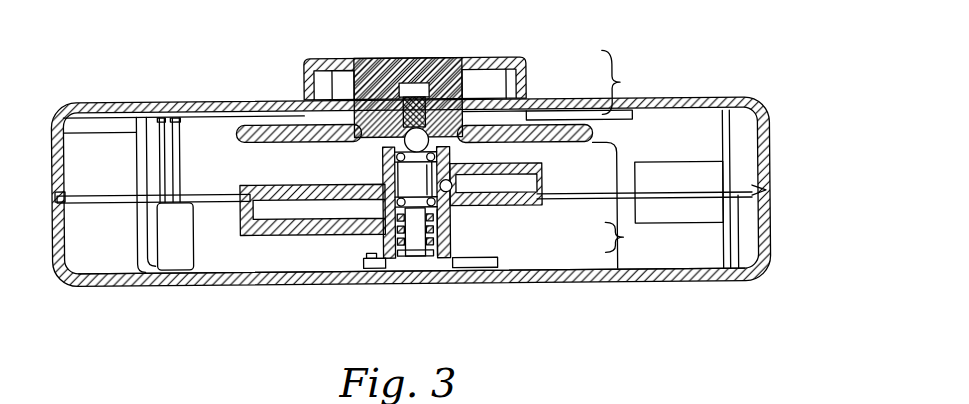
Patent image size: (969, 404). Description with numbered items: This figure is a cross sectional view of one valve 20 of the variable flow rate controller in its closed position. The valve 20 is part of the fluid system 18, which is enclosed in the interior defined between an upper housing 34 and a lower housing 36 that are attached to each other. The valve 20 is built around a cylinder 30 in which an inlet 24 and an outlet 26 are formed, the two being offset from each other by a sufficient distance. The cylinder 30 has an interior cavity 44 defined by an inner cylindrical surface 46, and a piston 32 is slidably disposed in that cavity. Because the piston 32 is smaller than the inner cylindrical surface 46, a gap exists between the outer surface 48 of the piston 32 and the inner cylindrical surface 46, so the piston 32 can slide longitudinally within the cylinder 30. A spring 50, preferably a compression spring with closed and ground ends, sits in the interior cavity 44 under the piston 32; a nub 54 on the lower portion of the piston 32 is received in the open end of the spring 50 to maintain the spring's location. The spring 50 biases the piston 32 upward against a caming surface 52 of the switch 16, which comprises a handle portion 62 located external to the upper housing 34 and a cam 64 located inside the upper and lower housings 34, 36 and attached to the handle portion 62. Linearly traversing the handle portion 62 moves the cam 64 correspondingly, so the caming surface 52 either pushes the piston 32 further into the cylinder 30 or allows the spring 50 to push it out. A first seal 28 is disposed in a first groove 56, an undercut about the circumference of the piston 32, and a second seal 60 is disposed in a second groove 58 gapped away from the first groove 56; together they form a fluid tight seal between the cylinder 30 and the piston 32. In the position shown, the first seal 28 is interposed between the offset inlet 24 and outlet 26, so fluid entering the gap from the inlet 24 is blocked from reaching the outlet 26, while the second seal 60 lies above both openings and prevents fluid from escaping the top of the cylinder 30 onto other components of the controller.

The switch 16 is at (631, 82).
The fluid system 18 is at (633, 238).
The valve 20 is at (343, 171).
The inlet 24 is at (520, 198).
The outlet 26 is at (268, 212).
The first seal 28 is at (473, 202).
The cylinder 30 is at (308, 114).
The piston 32 is at (383, 192).
The upper housing 34 is at (767, 115).
The lower housing 36 is at (770, 250).
The interior cavity 44 is at (398, 264).
The inner cylindrical surface 46 is at (430, 275).
The outer surface 48 is at (477, 125).
The spring 50 is at (447, 237).
The caming surface 52 is at (532, 133).
The nub 54 is at (424, 258).
The first groove 56 is at (405, 175).
The second groove 58 is at (363, 120).
The second seal 60 is at (447, 127).
The handle portion 62 is at (410, 129).
The cam 64 is at (270, 122).